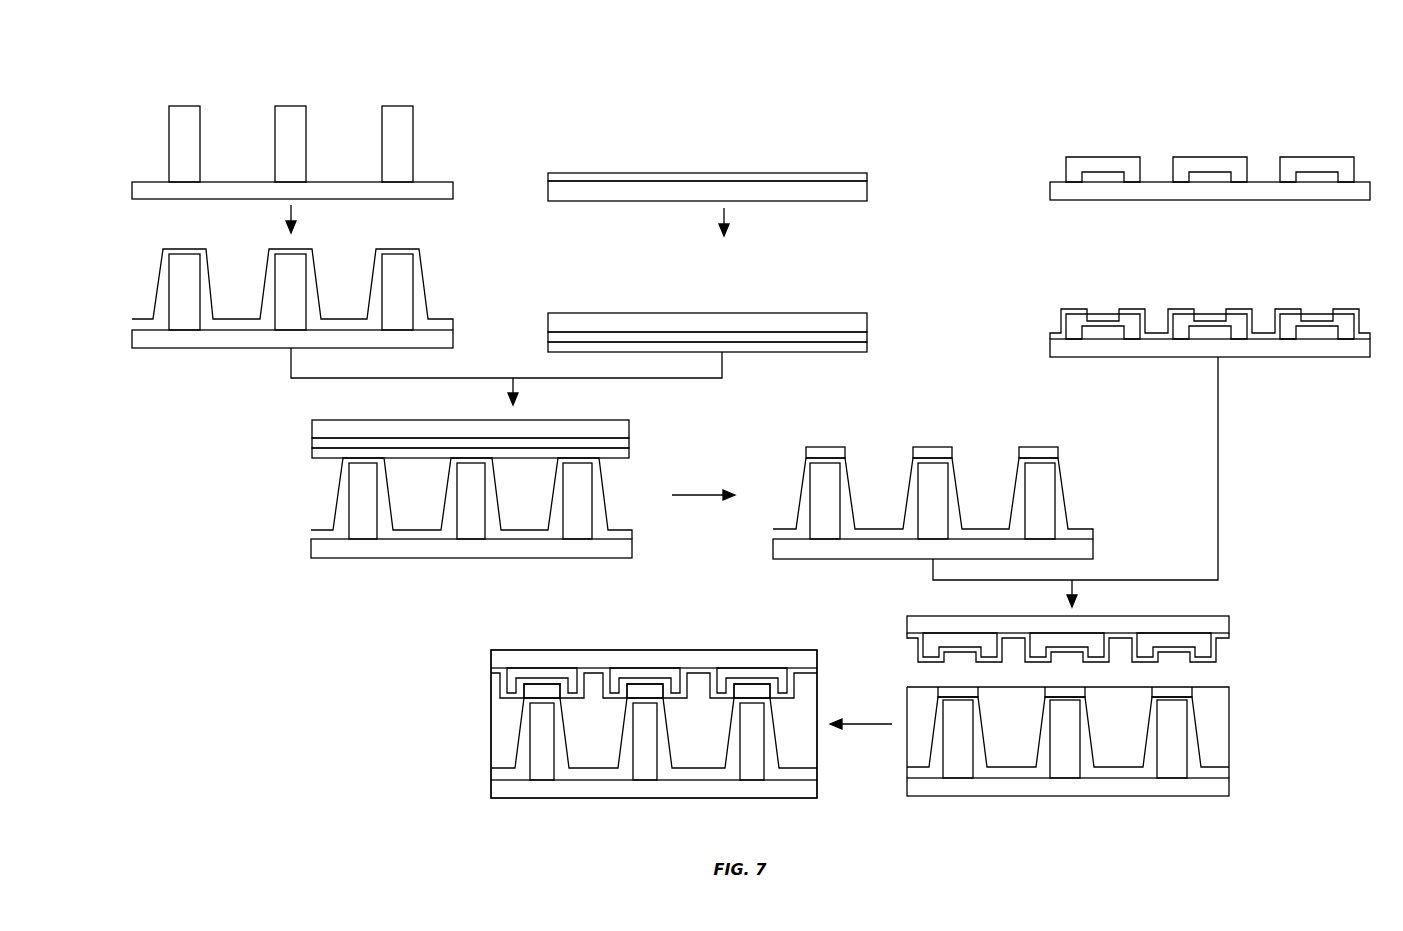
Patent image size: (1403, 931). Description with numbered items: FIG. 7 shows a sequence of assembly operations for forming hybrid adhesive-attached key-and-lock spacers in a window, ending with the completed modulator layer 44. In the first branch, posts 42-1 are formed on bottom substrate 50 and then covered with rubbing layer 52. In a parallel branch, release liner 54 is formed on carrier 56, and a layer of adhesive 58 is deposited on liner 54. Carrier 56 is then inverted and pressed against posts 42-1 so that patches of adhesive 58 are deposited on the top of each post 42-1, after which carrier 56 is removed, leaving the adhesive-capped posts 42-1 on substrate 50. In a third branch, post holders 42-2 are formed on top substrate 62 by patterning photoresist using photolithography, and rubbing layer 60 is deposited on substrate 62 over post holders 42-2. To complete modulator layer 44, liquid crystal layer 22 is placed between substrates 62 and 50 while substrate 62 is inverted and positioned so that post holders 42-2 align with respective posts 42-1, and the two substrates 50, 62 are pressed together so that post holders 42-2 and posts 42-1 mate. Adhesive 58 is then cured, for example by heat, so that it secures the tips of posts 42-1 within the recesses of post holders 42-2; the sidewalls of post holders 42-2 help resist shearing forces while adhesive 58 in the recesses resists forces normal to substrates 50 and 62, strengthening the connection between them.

The posts 42-1 is at (187, 112).
The post holders 42-2 is at (1062, 170).
The substrate 50 is at (448, 188).
The rubbing layer 52 is at (416, 310).
The release liner 54 is at (868, 176).
The carrier 56 is at (868, 195).
The adhesive 58 is at (868, 322).
The rubbing layer 60 is at (1207, 322).
The substrate 62 is at (1048, 191).
The liquid crystal layer 22 is at (1008, 690).
The modulator layer 44 is at (465, 777).